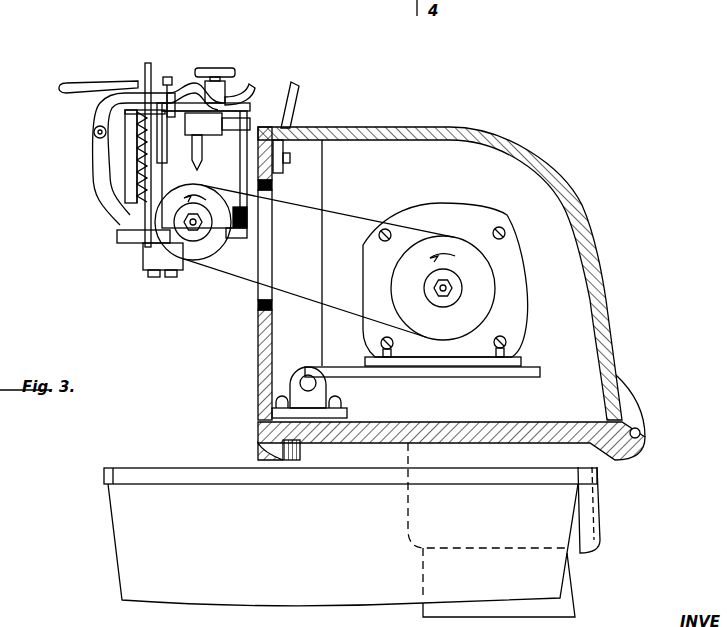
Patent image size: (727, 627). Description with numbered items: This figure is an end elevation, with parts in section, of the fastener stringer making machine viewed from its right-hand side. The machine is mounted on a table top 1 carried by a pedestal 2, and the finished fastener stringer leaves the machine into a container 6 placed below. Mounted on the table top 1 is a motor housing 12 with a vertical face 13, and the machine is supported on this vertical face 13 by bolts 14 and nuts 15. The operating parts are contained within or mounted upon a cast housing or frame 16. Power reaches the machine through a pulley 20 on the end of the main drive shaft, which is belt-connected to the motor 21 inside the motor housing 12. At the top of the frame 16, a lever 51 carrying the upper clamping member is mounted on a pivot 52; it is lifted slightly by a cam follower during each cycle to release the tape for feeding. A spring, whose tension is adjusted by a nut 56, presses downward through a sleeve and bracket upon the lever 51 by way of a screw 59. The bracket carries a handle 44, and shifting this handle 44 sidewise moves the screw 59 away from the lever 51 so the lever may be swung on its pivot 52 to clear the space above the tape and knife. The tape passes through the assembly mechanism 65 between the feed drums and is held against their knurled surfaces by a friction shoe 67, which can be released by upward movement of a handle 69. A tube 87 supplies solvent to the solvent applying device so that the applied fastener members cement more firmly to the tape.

The table top 1 is at (573, 455).
The pedestal 2 is at (557, 608).
The container 6 is at (165, 493).
The motor housing 12 is at (602, 284).
The vertical face 13 is at (257, 340).
The bolts 14 is at (290, 158).
The nuts 15 is at (300, 85).
The cast housing or frame 16 is at (227, 147).
The pulley 20 is at (192, 252).
The motor 21 is at (513, 270).
The handle 44 is at (73, 87).
The lever 51 is at (115, 108).
The pivot 52 is at (93, 134).
The nut 56 is at (213, 67).
The screw 59 is at (167, 77).
The assembly mechanism 65 is at (137, 197).
The friction shoe 67 is at (145, 110).
The handle 69 is at (148, 77).
The tube 87 is at (245, 87).